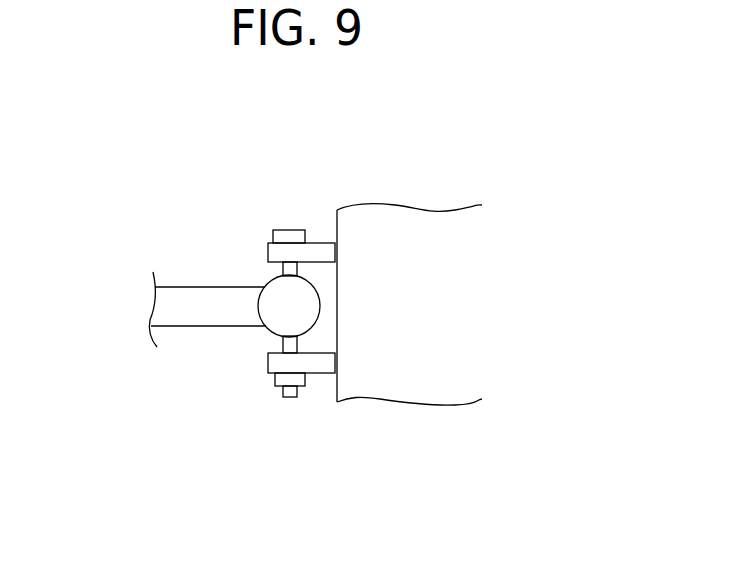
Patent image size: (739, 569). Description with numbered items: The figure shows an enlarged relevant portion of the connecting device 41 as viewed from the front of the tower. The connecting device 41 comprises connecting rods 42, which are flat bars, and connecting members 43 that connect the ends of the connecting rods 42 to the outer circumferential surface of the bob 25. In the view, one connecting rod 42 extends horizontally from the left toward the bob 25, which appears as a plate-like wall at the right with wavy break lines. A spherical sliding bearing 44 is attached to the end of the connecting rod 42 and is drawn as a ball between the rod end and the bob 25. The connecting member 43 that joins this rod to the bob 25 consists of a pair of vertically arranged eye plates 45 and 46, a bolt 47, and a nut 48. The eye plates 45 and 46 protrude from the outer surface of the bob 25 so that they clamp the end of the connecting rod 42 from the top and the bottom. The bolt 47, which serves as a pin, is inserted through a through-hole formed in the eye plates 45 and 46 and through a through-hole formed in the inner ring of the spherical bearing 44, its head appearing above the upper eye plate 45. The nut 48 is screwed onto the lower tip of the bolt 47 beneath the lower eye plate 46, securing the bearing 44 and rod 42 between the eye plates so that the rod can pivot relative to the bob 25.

The connecting device 41 is at (101, 213).
The connecting rod 42 is at (205, 313).
The connecting member 43 is at (220, 214).
The spherical bearing 44 is at (312, 303).
The eye plate 45 is at (318, 247).
The eye plate 46 is at (319, 367).
The bolt 47 is at (285, 235).
The nut 48 is at (273, 378).
The bob 25 is at (417, 387).